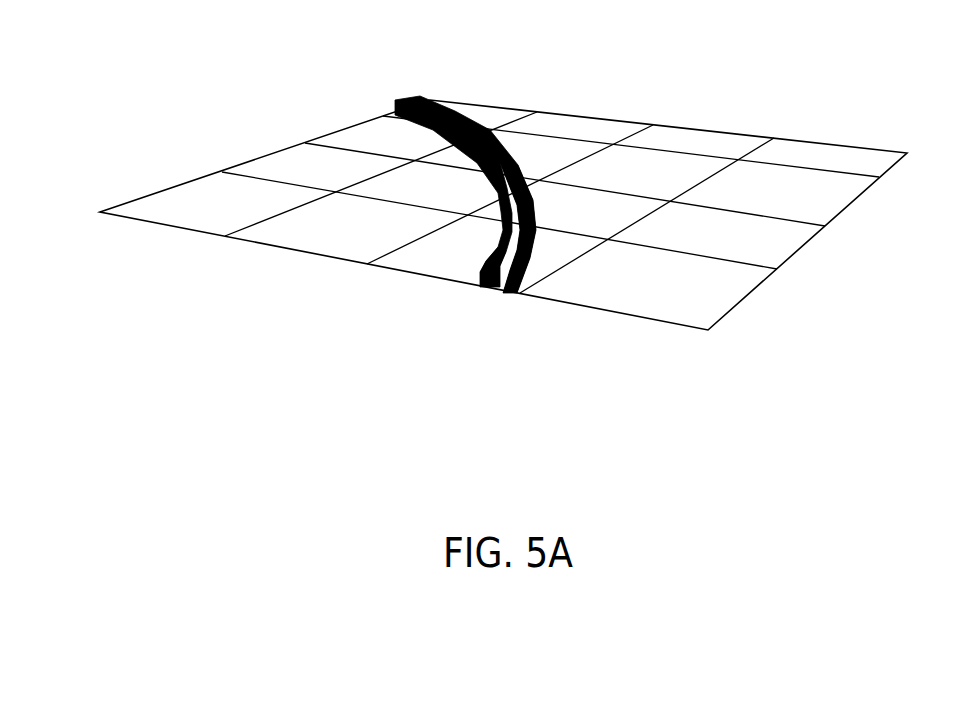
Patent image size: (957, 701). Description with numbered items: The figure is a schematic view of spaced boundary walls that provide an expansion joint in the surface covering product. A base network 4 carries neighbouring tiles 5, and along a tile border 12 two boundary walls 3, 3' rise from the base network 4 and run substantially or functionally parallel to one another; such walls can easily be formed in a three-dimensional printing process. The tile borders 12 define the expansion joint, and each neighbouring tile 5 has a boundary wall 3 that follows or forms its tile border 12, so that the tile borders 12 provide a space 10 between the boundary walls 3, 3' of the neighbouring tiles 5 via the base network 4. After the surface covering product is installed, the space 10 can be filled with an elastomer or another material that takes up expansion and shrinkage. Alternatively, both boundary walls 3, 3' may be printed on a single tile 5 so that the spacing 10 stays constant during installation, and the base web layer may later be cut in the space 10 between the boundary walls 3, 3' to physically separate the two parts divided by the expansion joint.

The boundary wall 3 is at (451, 161).
The boundary wall 3' is at (473, 160).
The base network 4 is at (222, 173).
The tile 5 is at (268, 167).
The space 10 is at (497, 278).
The tile border 12 is at (297, 251).